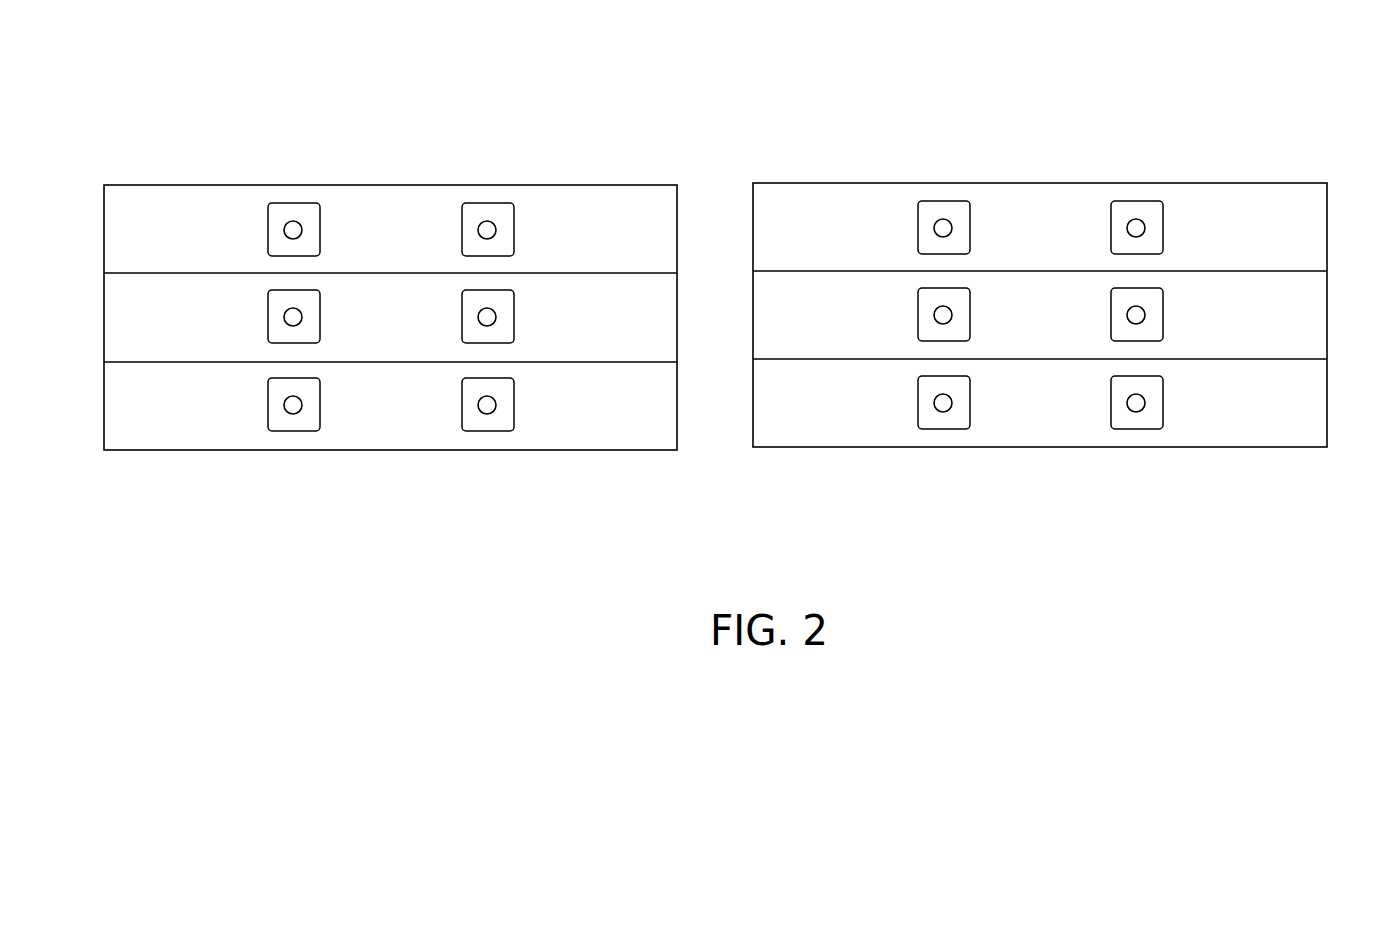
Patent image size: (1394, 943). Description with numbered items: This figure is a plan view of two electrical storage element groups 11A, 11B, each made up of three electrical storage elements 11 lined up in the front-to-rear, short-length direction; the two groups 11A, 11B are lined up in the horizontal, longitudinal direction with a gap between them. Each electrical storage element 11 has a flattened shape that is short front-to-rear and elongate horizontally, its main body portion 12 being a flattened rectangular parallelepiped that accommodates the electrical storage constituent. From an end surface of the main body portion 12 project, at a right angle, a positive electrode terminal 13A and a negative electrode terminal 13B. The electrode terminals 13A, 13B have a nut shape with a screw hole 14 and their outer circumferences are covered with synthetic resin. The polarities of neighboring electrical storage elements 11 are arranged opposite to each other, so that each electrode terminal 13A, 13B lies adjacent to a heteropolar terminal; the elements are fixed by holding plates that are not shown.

The electrical storage element 11 is at (658, 238).
The electrical storage element group 11A is at (488, 108).
The electrical storage element group 11B is at (1139, 106).
The main body portion 12 is at (148, 200).
The electrode terminal 13A is at (281, 213).
The electrode terminal 13B is at (493, 212).
The screw hole 14 is at (296, 413).